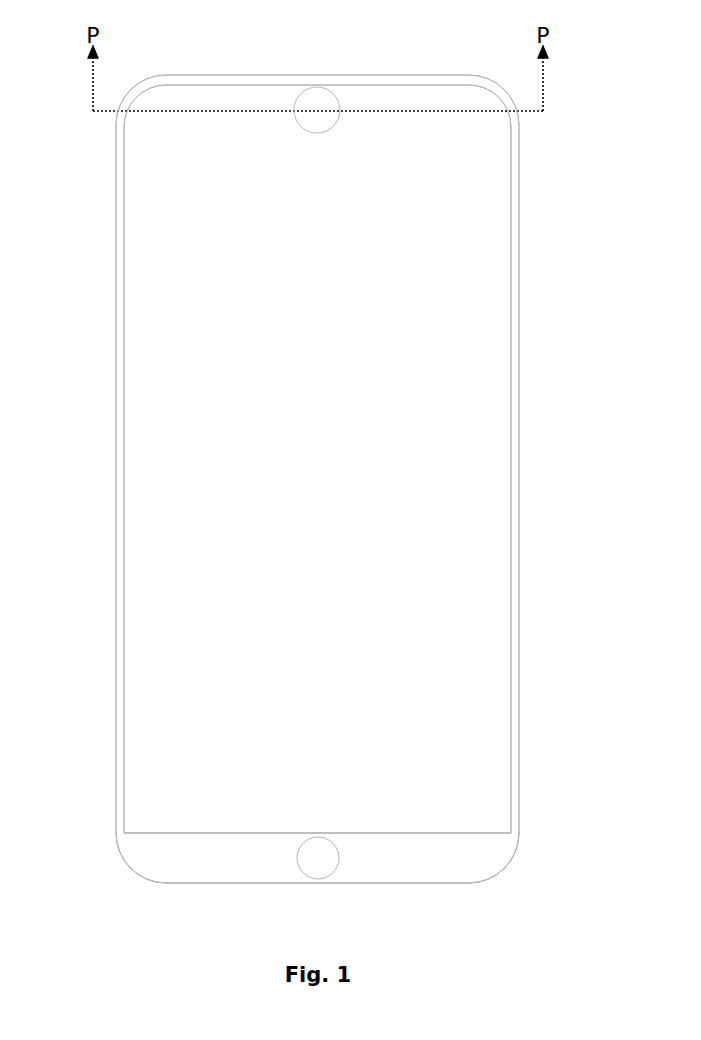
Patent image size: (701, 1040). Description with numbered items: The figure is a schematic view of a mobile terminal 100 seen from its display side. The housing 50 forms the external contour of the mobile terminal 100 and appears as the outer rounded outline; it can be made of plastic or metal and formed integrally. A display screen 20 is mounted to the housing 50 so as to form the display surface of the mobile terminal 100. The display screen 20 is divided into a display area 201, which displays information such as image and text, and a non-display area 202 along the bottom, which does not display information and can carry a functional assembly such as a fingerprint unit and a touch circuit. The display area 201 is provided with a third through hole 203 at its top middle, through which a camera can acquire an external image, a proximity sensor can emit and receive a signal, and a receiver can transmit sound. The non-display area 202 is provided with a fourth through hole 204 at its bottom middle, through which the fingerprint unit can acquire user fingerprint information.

The mobile terminal 100 is at (91, 458).
The housing 50 is at (518, 267).
The display screen 20 is at (511, 428).
The display area 201 is at (464, 607).
The non-display area 202 is at (465, 854).
The third through hole 203 is at (317, 102).
The fourth through hole 204 is at (318, 858).